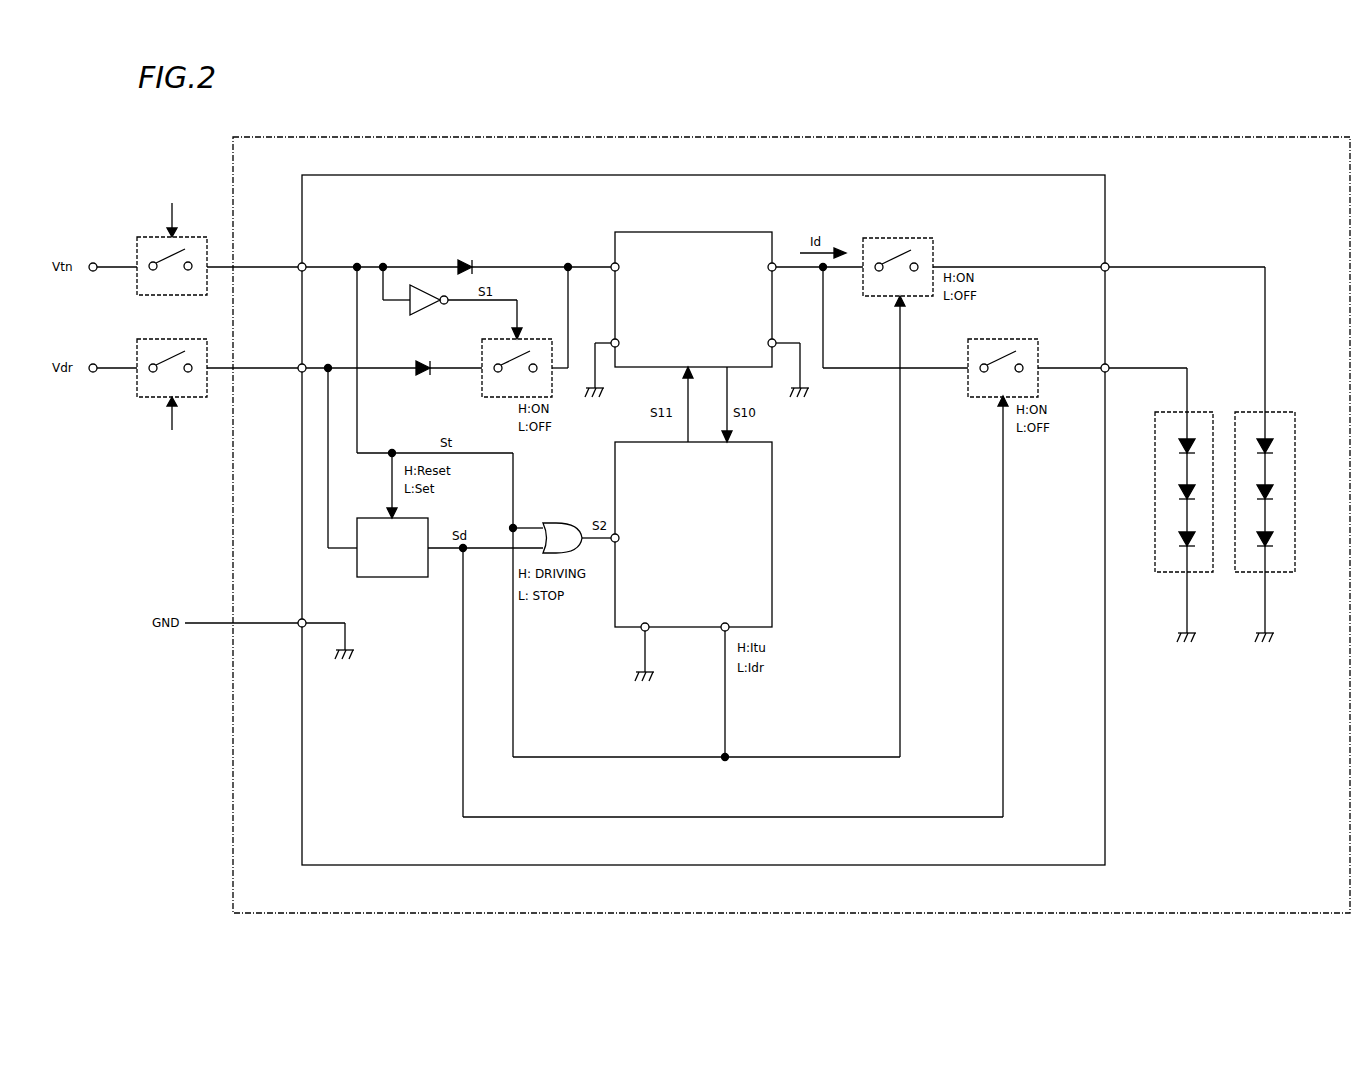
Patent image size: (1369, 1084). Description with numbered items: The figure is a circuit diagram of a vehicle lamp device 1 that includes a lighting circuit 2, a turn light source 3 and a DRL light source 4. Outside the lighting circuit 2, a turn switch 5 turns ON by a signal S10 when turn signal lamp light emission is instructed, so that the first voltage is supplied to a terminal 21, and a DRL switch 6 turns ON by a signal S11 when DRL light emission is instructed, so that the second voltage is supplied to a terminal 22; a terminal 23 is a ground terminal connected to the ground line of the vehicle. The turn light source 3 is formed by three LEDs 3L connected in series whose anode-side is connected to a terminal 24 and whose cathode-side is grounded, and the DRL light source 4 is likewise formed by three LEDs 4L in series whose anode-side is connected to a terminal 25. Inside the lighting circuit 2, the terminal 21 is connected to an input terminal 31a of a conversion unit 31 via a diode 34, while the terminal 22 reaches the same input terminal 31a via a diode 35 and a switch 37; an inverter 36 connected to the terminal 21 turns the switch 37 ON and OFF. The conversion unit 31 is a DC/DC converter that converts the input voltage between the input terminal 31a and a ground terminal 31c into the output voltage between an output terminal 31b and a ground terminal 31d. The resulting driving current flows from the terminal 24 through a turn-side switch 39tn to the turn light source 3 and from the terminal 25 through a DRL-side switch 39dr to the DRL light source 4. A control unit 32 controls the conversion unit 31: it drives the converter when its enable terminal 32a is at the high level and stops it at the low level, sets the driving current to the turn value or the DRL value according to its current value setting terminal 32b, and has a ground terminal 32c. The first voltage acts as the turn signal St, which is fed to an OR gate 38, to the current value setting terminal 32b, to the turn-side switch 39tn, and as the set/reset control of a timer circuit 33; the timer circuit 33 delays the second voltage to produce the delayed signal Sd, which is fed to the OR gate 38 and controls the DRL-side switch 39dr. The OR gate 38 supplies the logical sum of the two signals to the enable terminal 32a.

The vehicle lamp device 1 is at (1072, 132).
The lighting circuit 2 is at (1106, 196).
The turn light source 3 is at (1284, 489).
The LED 3L is at (1275, 447).
The DRL light source 4 is at (1174, 494).
The LED 4L is at (1178, 447).
The turn switch 5 is at (141, 237).
The DRL switch 6 is at (141, 397).
The signal S10 is at (165, 208).
The signal S11 is at (165, 425).
The terminal 21 is at (300, 263).
The terminal 22 is at (299, 372).
The ground terminal 23 is at (299, 627).
The terminal 24 is at (1110, 264).
The terminal 25 is at (1110, 365).
The conversion unit 31 is at (705, 232).
The input terminal 31a is at (610, 263).
The output terminal 31b is at (774, 262).
The ground terminal 31c is at (612, 340).
The ground terminal 31d is at (775, 340).
The control unit 32 is at (774, 508).
The enable terminal 32a is at (612, 535).
The current value setting terminal 32b is at (718, 633).
The ground terminal 32c is at (640, 631).
The timer circuit 33 is at (388, 578).
The diode 34 is at (462, 256).
The diode 35 is at (420, 374).
The inverter 36 is at (421, 316).
The switch 37 is at (538, 337).
The OR gate 38 is at (556, 524).
The turn-side switch 39tn is at (908, 237).
The DRL-side switch 39dr is at (983, 398).